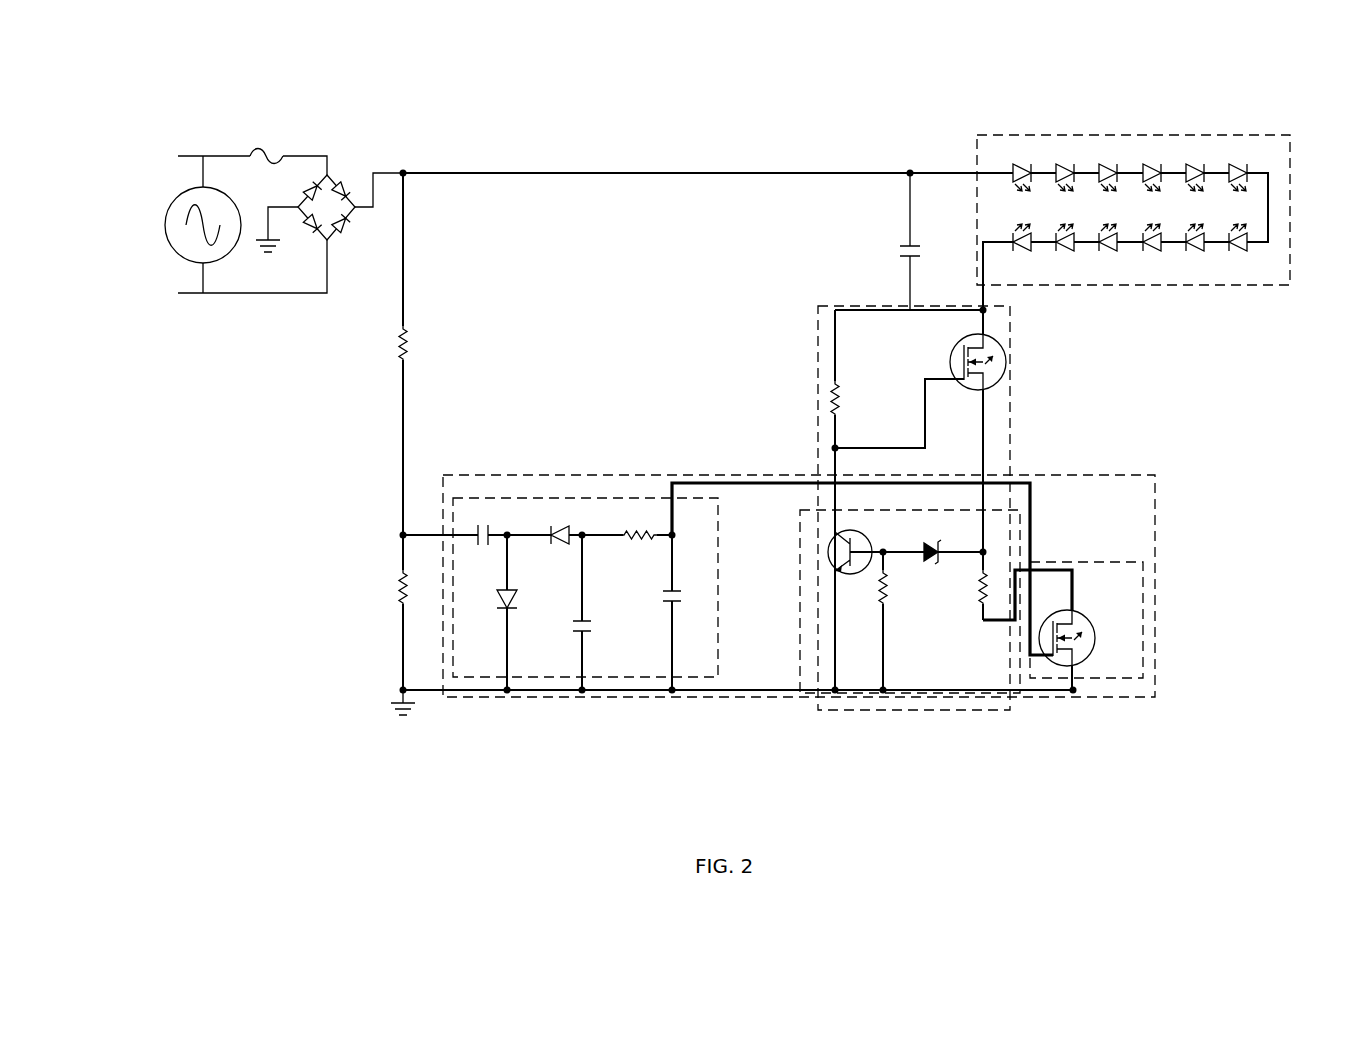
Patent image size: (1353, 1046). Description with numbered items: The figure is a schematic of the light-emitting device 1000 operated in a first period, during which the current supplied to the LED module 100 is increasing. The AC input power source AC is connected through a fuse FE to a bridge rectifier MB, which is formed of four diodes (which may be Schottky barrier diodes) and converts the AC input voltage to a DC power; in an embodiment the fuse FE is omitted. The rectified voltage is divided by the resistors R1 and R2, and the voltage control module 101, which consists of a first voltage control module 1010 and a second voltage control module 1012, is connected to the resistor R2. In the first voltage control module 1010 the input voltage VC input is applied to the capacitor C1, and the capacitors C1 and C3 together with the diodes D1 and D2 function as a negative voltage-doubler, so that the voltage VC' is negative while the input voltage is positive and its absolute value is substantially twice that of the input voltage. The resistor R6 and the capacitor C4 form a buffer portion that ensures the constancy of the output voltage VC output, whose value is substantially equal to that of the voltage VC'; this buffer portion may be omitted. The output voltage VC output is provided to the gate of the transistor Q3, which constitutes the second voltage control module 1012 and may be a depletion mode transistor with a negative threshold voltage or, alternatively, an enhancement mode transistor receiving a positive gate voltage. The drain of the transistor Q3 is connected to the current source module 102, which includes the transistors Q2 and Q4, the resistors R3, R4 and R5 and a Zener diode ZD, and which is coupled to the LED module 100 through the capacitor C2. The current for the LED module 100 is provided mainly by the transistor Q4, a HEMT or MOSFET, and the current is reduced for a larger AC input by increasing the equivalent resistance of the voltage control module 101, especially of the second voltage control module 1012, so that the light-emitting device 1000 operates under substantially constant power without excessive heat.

The light-emitting device 1000 is at (140, 91).
The LED module 100 is at (1133, 198).
The voltage control module 101 is at (1101, 473).
The first voltage control module 1010 is at (535, 497).
The current source module 102 is at (853, 712).
The second voltage control module 1012 is at (1113, 678).
The AC input power source AC is at (223, 224).
The fuse FE is at (266, 141).
The bridge rectifier MB is at (329, 219).
The resistor R1 is at (385, 343).
The resistor R2 is at (384, 587).
The resistor R3 is at (850, 398).
The resistor R4 is at (967, 599).
The resistor R5 is at (866, 597).
The resistor R6 is at (638, 551).
The capacitor C1 is at (478, 550).
The capacitor C2 is at (926, 241).
The capacitor C3 is at (568, 643).
The capacitor C4 is at (684, 582).
The diode D1 is at (516, 615).
The diode D2 is at (554, 554).
The Zener diode ZD is at (934, 570).
The transistor Q2 is at (860, 543).
The transistor Q3 is at (1075, 628).
The transistor Q4 is at (964, 357).
The input voltage VC input is at (405, 533).
The voltage VC' is at (609, 486).
The output voltage VC output is at (674, 533).